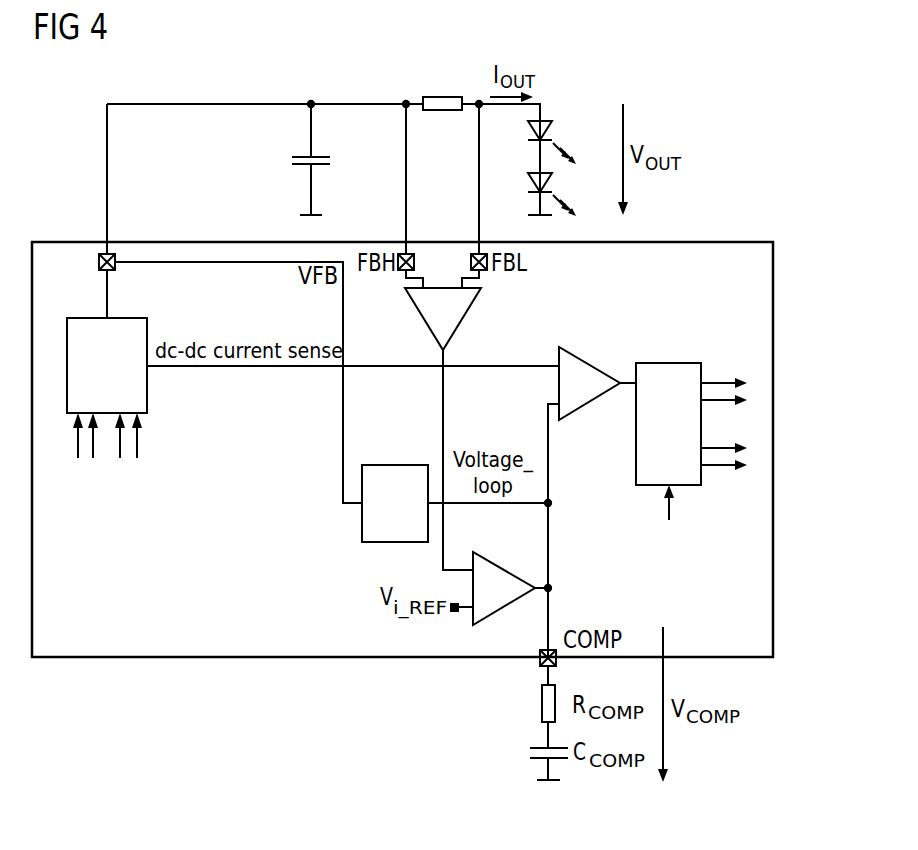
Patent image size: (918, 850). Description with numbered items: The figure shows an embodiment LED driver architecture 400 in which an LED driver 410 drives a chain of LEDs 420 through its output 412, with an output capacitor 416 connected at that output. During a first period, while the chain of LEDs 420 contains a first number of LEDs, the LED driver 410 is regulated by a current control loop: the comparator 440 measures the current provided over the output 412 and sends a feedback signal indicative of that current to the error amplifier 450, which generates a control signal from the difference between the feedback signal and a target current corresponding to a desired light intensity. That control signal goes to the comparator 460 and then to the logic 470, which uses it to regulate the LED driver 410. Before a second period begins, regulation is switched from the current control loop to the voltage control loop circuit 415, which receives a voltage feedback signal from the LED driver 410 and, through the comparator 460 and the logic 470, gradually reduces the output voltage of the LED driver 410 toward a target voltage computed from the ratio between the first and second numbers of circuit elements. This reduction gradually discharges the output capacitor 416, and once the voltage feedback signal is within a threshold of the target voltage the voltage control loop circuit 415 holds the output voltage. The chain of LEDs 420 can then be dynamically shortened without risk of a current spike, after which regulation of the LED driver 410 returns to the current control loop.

The LED driver architecture 400 is at (701, 88).
The LED driver 410 is at (85, 318).
The output 412 is at (441, 97).
The voltage control loop circuit 415 is at (393, 465).
The output capacitor 416 is at (292, 160).
The chain of LEDs 420 is at (552, 130).
The current control loop comparator 440 is at (462, 322).
The error amplifier 450 is at (500, 565).
The comparator 460 is at (589, 362).
The logic 470 is at (668, 363).